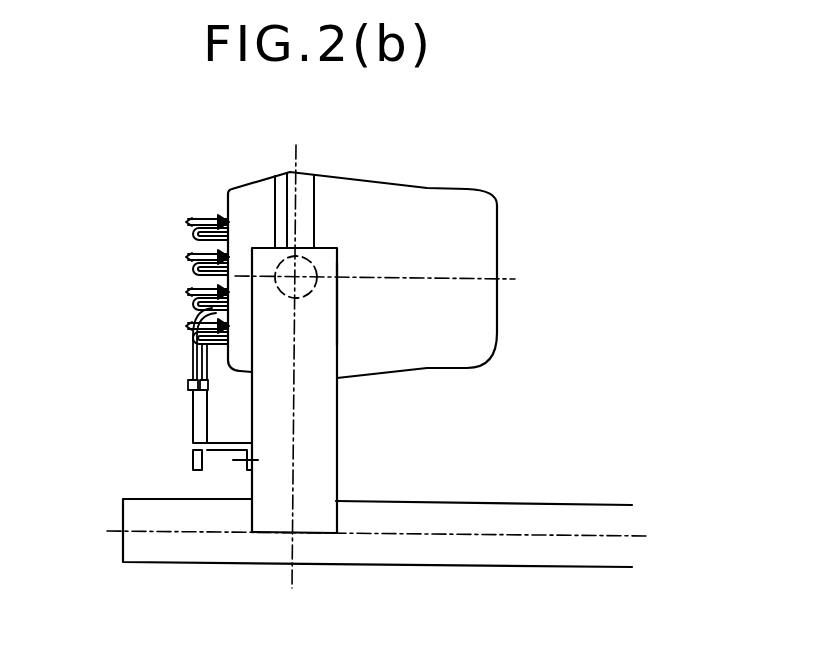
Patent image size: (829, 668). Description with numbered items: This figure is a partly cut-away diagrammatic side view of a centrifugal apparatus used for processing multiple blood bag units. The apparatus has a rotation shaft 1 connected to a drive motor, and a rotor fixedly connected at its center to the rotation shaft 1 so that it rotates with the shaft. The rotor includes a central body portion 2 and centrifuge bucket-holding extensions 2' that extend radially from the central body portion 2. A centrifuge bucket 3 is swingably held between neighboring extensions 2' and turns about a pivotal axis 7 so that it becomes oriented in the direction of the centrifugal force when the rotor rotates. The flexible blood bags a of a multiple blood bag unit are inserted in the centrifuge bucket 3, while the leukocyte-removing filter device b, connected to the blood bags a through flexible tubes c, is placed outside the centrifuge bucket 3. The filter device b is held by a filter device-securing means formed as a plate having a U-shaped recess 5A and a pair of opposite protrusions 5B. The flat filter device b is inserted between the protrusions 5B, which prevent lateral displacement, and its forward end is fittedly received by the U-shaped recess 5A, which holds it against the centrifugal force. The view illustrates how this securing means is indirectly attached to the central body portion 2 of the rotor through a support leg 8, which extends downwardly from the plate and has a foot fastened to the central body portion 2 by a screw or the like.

The rotation shaft 1 is at (390, 557).
The central body portion 2 is at (338, 390).
The centrifuge bucket-holding extension 2' is at (387, 339).
The centrifuge bucket 3 is at (362, 192).
The pivotal axis 7 is at (302, 276).
The U-shaped recess 5A is at (187, 386).
The protrusion 5B is at (200, 423).
The support leg 8 is at (226, 452).
The flexible blood bag a is at (192, 219).
The leukocyte-removing filter device b is at (193, 457).
The flexible tube c is at (196, 240).